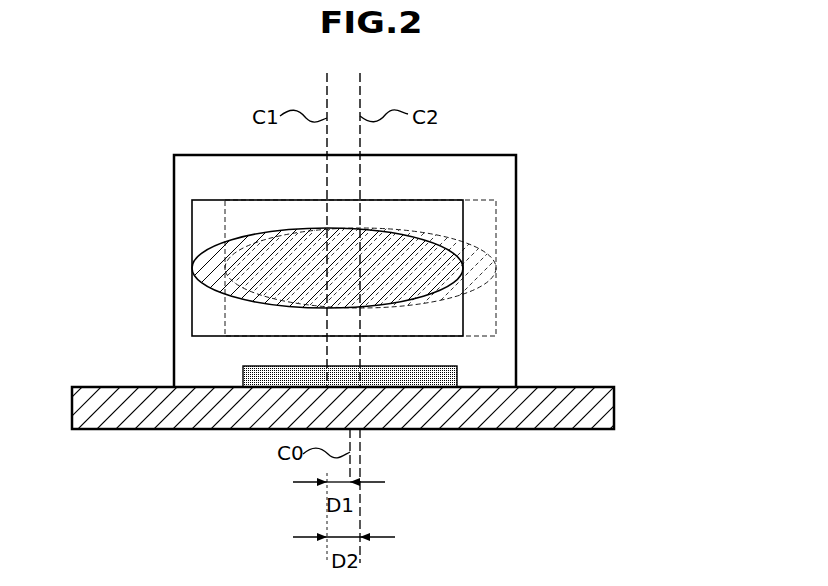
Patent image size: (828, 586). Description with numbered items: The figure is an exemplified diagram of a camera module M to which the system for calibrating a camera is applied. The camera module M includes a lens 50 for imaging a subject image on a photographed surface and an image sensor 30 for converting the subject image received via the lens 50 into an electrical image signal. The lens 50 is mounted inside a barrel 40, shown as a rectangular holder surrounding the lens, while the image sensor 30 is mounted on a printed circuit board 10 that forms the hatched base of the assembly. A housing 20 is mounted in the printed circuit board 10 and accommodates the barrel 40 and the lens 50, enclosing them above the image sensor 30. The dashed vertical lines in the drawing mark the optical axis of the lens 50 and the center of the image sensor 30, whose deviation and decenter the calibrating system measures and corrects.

The printed circuit board 10 is at (614, 402).
The housing 20 is at (516, 188).
The image sensor 30 is at (457, 374).
The barrel 40 is at (463, 303).
The lens 50 is at (463, 240).
The camera module M is at (375, 230).